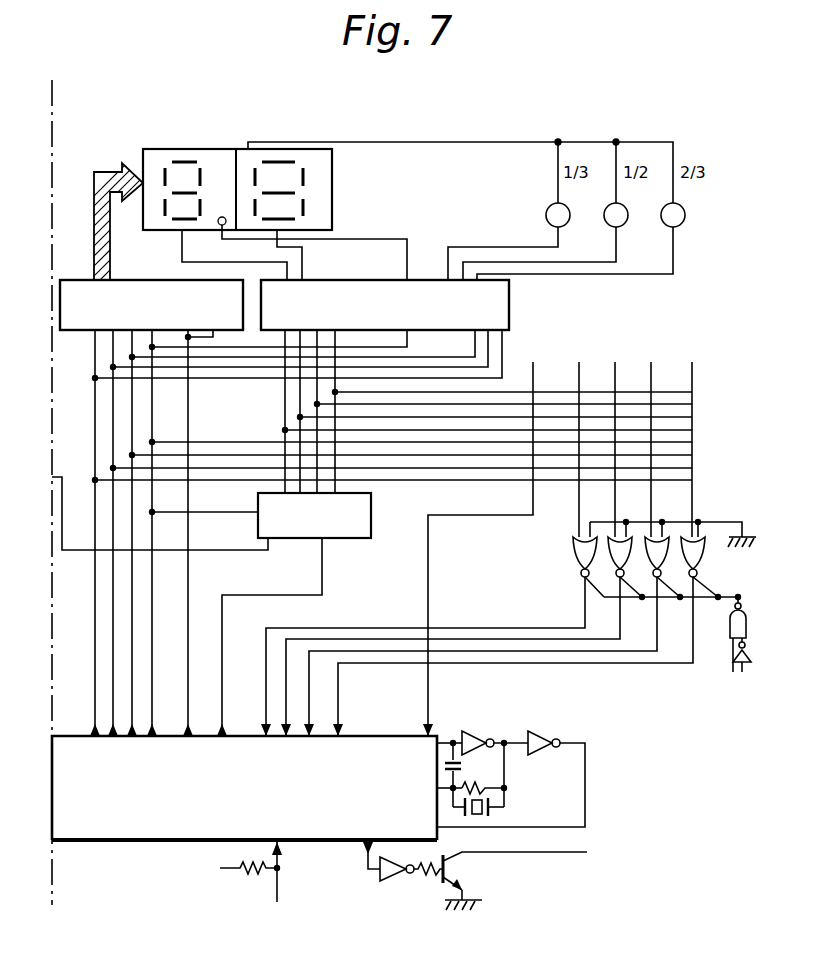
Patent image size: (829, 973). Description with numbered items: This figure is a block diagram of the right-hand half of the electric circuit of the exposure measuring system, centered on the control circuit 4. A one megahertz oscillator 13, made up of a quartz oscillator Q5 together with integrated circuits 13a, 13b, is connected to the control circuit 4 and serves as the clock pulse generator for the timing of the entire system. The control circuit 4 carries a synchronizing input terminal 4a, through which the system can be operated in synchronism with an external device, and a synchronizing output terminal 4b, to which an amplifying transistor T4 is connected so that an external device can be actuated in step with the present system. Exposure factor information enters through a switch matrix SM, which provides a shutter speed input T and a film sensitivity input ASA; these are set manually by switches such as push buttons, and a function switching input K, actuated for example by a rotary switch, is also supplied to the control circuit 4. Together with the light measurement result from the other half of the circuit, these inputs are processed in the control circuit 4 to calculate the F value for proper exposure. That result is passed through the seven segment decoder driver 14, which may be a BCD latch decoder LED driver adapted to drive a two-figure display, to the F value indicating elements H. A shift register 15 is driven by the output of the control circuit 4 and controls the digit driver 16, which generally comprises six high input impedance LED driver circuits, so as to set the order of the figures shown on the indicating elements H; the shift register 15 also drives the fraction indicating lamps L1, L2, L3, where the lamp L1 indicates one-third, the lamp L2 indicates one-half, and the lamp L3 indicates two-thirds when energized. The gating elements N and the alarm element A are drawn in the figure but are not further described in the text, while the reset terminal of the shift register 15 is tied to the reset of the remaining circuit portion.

The control circuit 4 is at (244, 788).
The synchronizing input terminal 4a is at (266, 872).
The synchronizing output terminal 4b is at (399, 846).
The oscillator 13 is at (512, 764).
The integrated circuit 13a is at (478, 731).
The integrated circuit 13b is at (544, 731).
The seven segment decoder driver 14 is at (151, 305).
The shift register 15 is at (314, 516).
The digit driver 16 is at (385, 305).
The F value indicating elements H is at (237, 171).
The fraction indicating lamp L1 is at (544, 211).
The fraction indicating lamp L2 is at (606, 211).
The fraction indicating lamp L3 is at (660, 211).
The function switching input K is at (544, 355).
The shutter speed input T is at (596, 355).
The film sensitivity input ASA is at (675, 355).
The switch matrix SM is at (612, 315).
The NOR gates N is at (511, 627).
The alarm A is at (740, 634).
The quartz oscillator Q5 is at (488, 818).
The amplifying transistor T4 is at (452, 870).